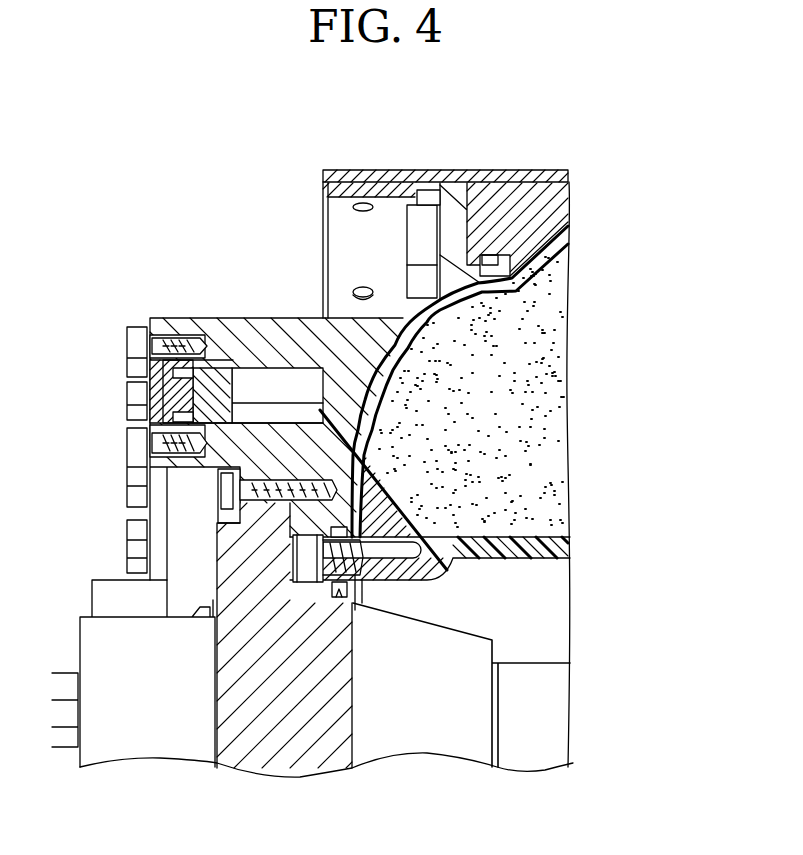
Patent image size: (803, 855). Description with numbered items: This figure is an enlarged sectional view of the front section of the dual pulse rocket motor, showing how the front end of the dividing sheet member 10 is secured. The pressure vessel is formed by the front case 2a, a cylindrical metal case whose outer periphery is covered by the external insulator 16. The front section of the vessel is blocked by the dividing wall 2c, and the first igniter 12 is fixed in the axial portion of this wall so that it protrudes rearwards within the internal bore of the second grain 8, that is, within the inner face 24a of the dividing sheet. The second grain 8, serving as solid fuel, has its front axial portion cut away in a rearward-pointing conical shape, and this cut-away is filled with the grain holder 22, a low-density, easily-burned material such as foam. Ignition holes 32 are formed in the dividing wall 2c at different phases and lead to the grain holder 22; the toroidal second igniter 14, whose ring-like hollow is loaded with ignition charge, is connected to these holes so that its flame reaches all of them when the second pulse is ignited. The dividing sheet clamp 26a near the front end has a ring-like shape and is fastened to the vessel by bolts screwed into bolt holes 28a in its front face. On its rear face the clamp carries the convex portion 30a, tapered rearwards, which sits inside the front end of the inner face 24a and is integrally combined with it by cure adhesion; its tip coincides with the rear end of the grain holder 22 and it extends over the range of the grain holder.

The front case 2a is at (518, 215).
The dividing wall 2c is at (297, 357).
The second grain 8 is at (517, 358).
The dividing sheet member 10 is at (585, 517).
The first igniter 12 is at (547, 702).
The second igniter 14 is at (253, 378).
The external insulator 16 is at (369, 180).
The grain holder 22 is at (388, 503).
The inner face 24a is at (555, 548).
The dividing sheet clamp 26a is at (338, 598).
The bolt hole 28a is at (323, 550).
The convex portion 30a is at (411, 550).
The ignition hole 32 is at (327, 433).